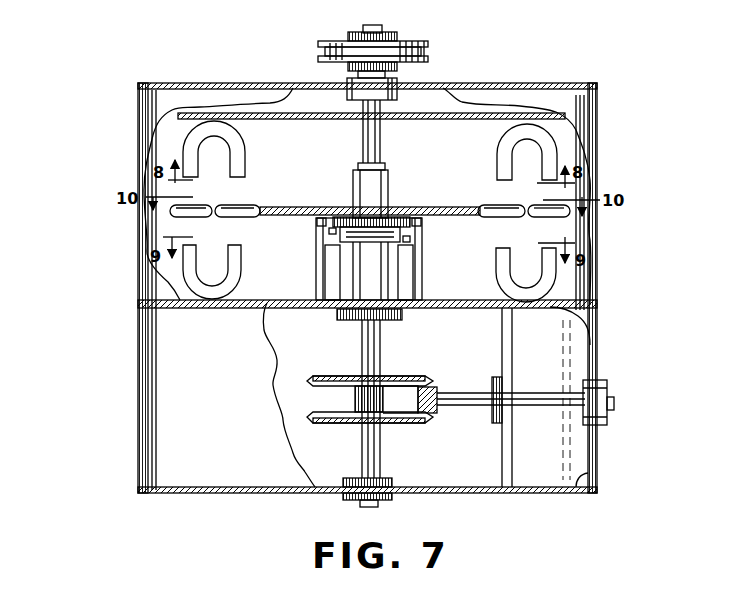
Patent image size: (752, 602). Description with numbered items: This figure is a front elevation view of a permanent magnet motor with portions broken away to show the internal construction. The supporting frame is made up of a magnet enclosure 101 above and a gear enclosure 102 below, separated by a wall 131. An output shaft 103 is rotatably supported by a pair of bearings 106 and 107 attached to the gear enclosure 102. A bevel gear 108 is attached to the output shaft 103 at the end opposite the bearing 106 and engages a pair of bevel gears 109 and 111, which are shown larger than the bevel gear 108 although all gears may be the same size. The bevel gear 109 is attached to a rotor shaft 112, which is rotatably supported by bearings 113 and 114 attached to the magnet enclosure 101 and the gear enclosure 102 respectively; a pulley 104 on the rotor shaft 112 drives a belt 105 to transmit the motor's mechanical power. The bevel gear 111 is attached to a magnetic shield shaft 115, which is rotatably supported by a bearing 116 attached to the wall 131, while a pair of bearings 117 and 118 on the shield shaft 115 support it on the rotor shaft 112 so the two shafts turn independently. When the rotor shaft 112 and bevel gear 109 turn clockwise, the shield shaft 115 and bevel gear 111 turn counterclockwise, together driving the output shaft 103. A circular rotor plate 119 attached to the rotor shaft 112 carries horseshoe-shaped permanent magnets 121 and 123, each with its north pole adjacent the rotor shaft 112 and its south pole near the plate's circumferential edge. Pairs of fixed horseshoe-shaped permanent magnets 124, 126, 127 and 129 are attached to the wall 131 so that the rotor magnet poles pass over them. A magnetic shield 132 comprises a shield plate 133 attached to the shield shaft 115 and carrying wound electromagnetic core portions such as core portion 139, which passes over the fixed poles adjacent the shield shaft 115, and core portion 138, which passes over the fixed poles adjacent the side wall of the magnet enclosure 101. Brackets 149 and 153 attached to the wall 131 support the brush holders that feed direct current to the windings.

The magnet enclosure 101 is at (597, 100).
The gear enclosure 102 is at (597, 495).
The output shaft 103 is at (612, 403).
The pulley 104 is at (420, 42).
The belt 105 is at (320, 50).
The bearing 106 is at (598, 425).
The bearing 107 is at (497, 423).
The bevel gear 108 is at (437, 395).
The bevel gear 109 is at (395, 417).
The bevel gear 111 is at (390, 382).
The rotor shaft 112 is at (365, 440).
The bearing 113 is at (395, 82).
The bearing 114 is at (385, 500).
The magnetic shield shaft 115 is at (358, 332).
The bearing 116 is at (395, 316).
The bearing 117 is at (372, 165).
The bearing 118 is at (355, 398).
The rotor plate 119 is at (488, 115).
The horseshoe-shaped permanent magnet 121 is at (195, 138).
The horseshoe-shaped permanent magnet 123 is at (553, 152).
The horseshoe-shaped permanent magnet 124 is at (210, 298).
The horseshoe-shaped permanent magnet 126 is at (330, 278).
The horseshoe-shaped permanent magnet 127 is at (410, 278).
The horseshoe-shaped permanent magnet 129 is at (548, 287).
The wall 131 is at (440, 300).
The magnetic shield 132 is at (293, 198).
The shield plate 133 is at (188, 212).
The electromagnetic core portion 138 is at (557, 217).
The electromagnetic core portion 139 is at (495, 210).
The bracket 149 is at (322, 240).
The bracket 153 is at (428, 248).